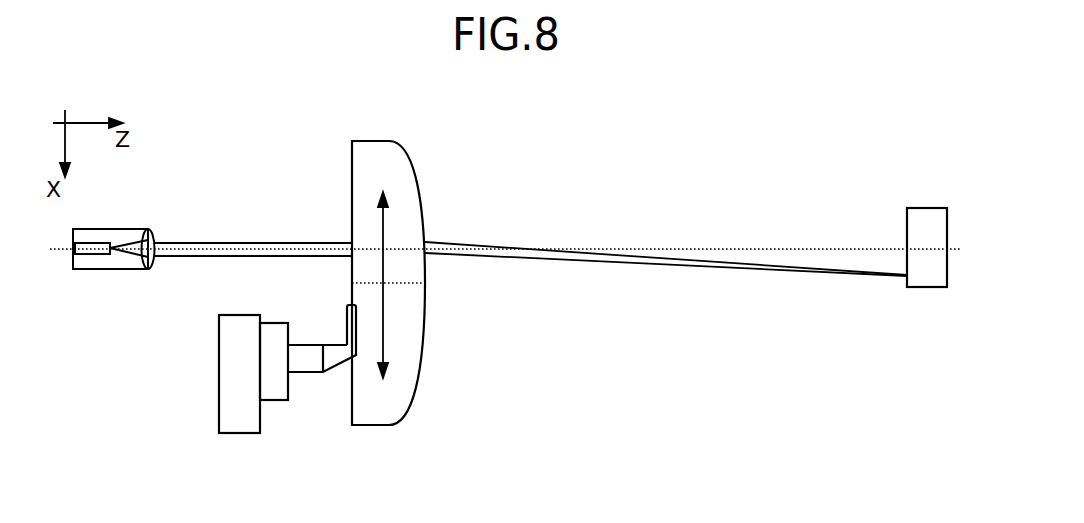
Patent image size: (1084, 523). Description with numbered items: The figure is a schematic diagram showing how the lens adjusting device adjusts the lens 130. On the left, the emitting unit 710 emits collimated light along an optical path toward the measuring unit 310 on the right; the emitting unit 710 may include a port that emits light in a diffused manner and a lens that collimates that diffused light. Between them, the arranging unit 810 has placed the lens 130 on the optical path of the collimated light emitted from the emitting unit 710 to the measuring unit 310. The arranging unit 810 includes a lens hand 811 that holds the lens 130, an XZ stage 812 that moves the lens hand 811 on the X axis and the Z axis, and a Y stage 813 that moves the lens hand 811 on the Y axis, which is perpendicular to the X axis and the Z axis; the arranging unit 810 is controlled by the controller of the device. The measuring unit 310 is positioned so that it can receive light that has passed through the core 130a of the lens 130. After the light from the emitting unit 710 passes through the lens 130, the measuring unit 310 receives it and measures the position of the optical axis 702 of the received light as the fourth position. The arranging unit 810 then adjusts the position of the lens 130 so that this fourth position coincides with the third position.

The emitting unit 710 is at (120, 229).
The optical axis of the received light 702 is at (906, 280).
The lens 130 is at (374, 141).
The core of the lens 130a is at (410, 283).
The measuring unit 310 is at (930, 208).
The arranging unit 810 is at (273, 441).
The lens hand 811 is at (337, 345).
The XZ stage 812 is at (279, 323).
The Y stage 813 is at (228, 315).